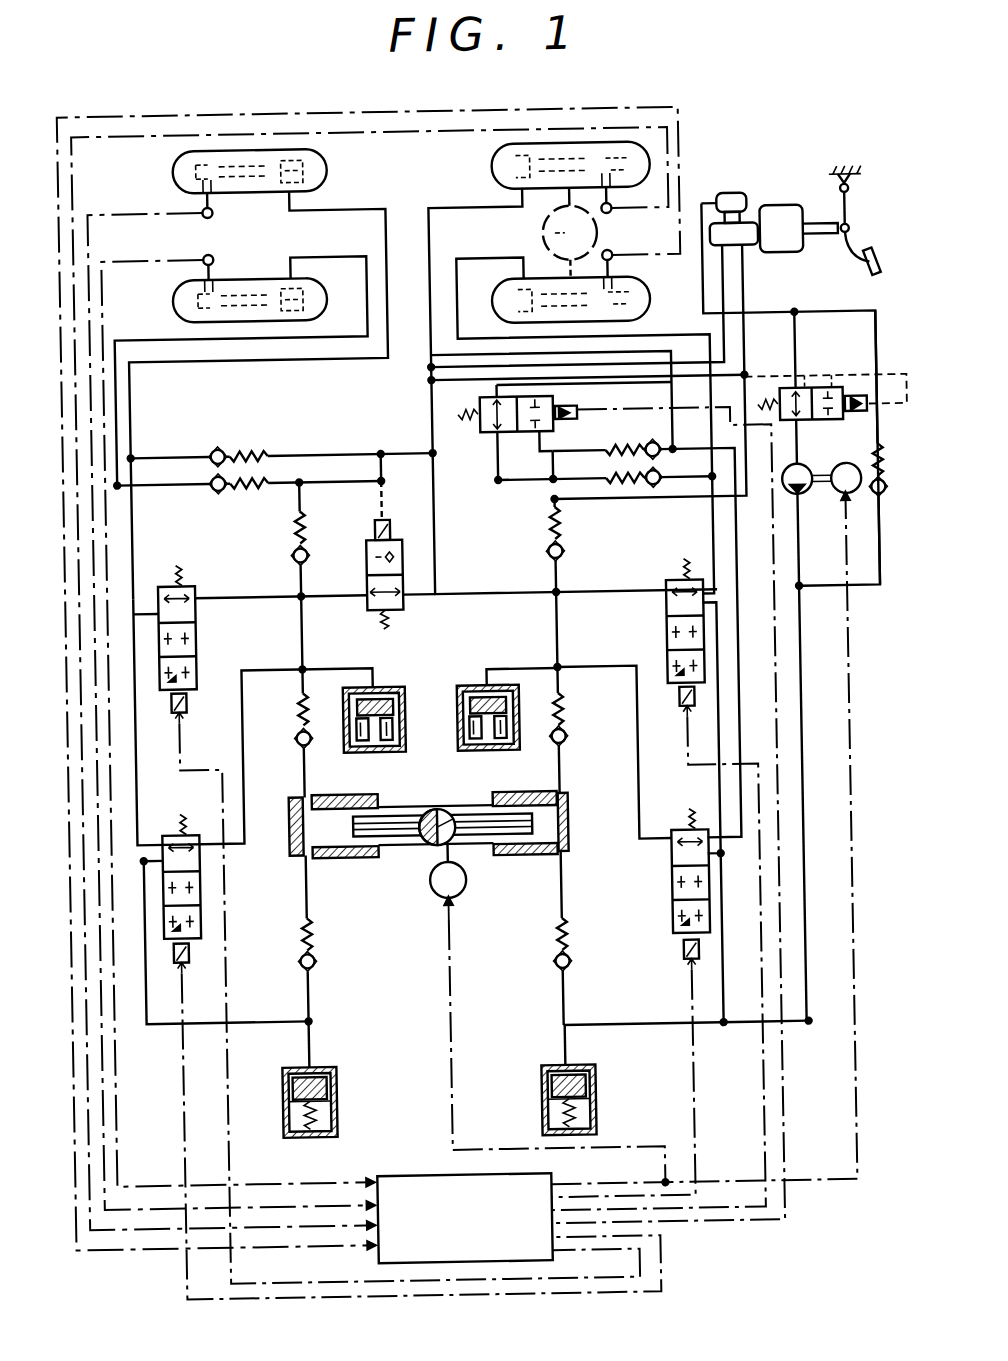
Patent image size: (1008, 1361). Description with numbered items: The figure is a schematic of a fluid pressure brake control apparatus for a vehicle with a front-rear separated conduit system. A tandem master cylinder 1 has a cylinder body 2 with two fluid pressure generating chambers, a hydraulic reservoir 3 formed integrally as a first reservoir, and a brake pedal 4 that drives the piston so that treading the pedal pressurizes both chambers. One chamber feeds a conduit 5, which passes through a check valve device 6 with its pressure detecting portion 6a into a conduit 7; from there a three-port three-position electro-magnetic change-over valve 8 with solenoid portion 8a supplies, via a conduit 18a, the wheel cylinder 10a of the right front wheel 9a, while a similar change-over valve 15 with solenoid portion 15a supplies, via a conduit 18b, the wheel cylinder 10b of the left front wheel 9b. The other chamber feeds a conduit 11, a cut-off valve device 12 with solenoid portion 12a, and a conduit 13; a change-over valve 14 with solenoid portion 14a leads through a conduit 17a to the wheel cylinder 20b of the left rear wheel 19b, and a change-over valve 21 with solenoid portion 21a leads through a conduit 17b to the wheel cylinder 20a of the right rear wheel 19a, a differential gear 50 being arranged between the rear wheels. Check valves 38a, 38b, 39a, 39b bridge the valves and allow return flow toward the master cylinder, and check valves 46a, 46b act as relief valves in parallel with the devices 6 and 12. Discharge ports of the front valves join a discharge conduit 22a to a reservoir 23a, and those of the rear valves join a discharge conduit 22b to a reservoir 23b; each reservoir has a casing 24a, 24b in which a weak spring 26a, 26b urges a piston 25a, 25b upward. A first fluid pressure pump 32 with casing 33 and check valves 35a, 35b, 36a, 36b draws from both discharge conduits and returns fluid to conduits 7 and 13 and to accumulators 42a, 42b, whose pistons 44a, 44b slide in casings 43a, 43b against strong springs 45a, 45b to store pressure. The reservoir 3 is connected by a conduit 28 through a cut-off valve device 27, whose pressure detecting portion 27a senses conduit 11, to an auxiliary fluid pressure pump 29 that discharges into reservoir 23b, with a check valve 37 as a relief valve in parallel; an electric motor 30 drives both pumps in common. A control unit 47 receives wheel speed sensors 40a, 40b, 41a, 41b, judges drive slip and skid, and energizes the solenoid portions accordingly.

The tandem master cylinder 1 is at (787, 206).
The cylinder body 2 is at (752, 249).
The hydraulic reservoir 3 is at (736, 197).
The brake pedal 4 is at (886, 260).
The conduit 5 is at (730, 334).
The check valve device 6 is at (400, 532).
The pressure detecting portion 6a is at (378, 538).
The conduit 7 is at (332, 593).
The electro-magnetic change-over valve 8 is at (188, 580).
The solenoid portion 8a is at (188, 700).
The right front wheel 9a is at (182, 168).
The left front wheel 9b is at (180, 296).
The wheel cylinder 10a is at (334, 167).
The wheel cylinder 10b is at (326, 296).
The conduit 11 is at (750, 294).
The cut-off valve device 12 is at (482, 408).
The solenoid portion 12a is at (572, 406).
The conduit 13 is at (516, 587).
The change-over valve 14 is at (678, 580).
The solenoid portion 14a is at (680, 700).
The change-over valve 15 is at (188, 829).
The solenoid portion 15a is at (184, 966).
The conduit 17a is at (716, 530).
The conduit 17b is at (718, 802).
The conduit 18a is at (141, 418).
The conduit 18b is at (135, 791).
The right rear wheel 19a is at (660, 160).
The left rear wheel 19b is at (647, 300).
The wheel cylinder 20a is at (502, 164).
The wheel cylinder 20b is at (522, 302).
The change-over valve 21 is at (670, 832).
The solenoid portion 21a is at (678, 960).
The discharge conduit 22a is at (254, 1017).
The discharge conduit 22b is at (622, 1024).
The hydraulic reservoir 23a is at (318, 1066).
The hydraulic reservoir 23b is at (572, 1068).
The casing 24a is at (286, 1084).
The casing 24b is at (544, 1085).
The piston 25a is at (286, 1108).
The piston 25b is at (544, 1109).
The spring 26a is at (324, 1108).
The spring 26b is at (583, 1110).
The cut-off valve device 27 is at (836, 382).
The pressure detecting portion 27a is at (870, 420).
The conduit 28 is at (772, 316).
The auxiliary fluid pressure pump 29 is at (800, 472).
The electric motor 30 is at (427, 877).
The first fluid pressure pump 32 is at (434, 806).
The casing 33 is at (336, 854).
The check valve 35a is at (294, 956).
The check valve 35b is at (568, 961).
The check valve 36a is at (294, 730).
The check valve 36b is at (568, 732).
The check valve 37 is at (890, 490).
The check valve 38a is at (222, 446).
The check valve 38b is at (650, 448).
The check valve 39a is at (224, 488).
The check valve 39b is at (649, 486).
The wheel speed sensor 40a is at (221, 208).
The wheel speed sensor 40b is at (221, 255).
The wheel speed sensor 41a is at (616, 212).
The wheel speed sensor 41b is at (616, 253).
The accumulator 42a is at (383, 680).
The accumulator 42b is at (496, 680).
The casing 43a is at (352, 745).
The casing 43b is at (478, 748).
The piston 44a is at (394, 708).
The piston 44b is at (468, 726).
The spring 45a is at (383, 748).
The spring 45b is at (508, 745).
The check valve 46a is at (294, 554).
The check valve 46b is at (568, 553).
The control unit 47 is at (436, 1174).
The differential gear 50 is at (552, 233).